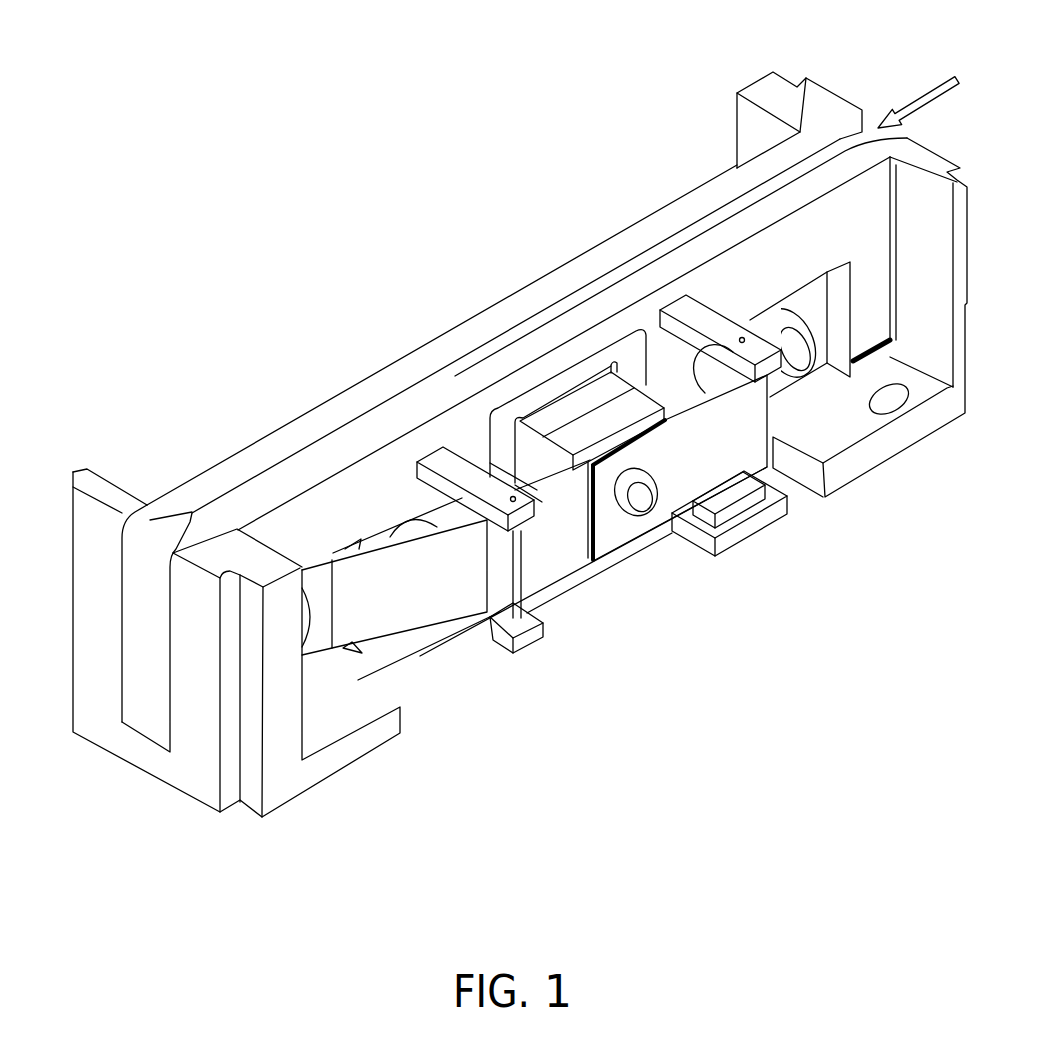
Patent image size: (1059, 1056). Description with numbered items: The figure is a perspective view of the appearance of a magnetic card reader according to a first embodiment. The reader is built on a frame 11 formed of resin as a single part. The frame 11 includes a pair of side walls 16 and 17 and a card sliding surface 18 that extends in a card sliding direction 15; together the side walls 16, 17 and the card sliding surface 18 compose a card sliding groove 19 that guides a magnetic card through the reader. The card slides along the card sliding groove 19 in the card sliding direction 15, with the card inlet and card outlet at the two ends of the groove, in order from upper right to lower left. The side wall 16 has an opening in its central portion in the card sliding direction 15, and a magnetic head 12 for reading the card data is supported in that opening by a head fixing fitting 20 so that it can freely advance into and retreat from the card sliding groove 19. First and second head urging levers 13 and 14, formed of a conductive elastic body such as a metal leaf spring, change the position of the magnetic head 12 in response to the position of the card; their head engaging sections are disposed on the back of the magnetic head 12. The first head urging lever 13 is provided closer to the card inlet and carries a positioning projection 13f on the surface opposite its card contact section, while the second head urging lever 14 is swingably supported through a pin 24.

The frame 11 is at (330, 772).
The magnetic head 12 is at (530, 462).
The first head urging lever 13 is at (727, 468).
The positioning projection 13f is at (638, 503).
The second head urging lever 14 is at (423, 608).
The card sliding direction 15 is at (918, 95).
The side wall 16 is at (717, 237).
The side wall 17 is at (642, 235).
The card sliding surface 18 is at (155, 730).
The card sliding groove 19 is at (335, 435).
The head fixing fitting 20 is at (560, 385).
The pin 24 is at (520, 582).